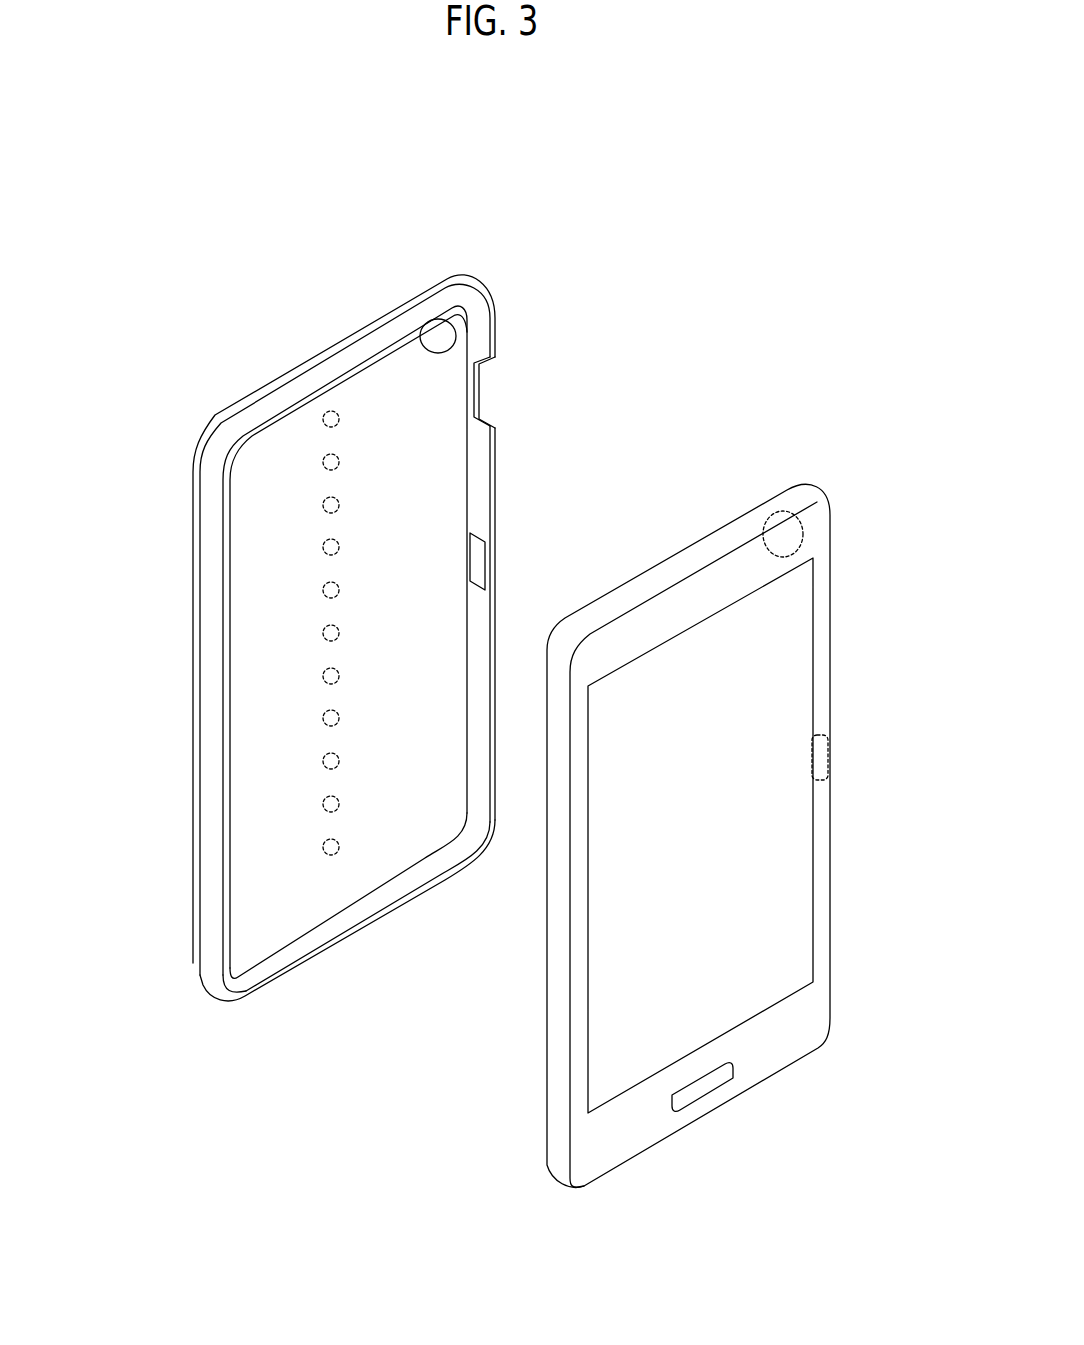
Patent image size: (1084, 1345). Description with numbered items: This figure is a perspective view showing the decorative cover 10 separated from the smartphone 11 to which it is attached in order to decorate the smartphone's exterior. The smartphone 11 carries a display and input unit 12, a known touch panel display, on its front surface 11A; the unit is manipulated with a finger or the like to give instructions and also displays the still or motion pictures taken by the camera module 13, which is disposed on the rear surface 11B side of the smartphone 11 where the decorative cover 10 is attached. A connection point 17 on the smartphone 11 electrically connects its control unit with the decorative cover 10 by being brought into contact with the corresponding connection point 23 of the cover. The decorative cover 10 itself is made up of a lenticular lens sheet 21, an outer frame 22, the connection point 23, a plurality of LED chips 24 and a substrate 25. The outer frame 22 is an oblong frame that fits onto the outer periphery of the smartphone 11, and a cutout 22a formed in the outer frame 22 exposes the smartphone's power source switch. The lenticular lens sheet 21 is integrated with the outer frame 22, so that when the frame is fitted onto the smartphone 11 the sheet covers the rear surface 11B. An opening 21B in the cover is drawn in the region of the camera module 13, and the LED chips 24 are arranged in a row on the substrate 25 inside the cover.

The decorative cover 10 is at (330, 614).
The smartphone 11 is at (692, 794).
The front surface 11A is at (681, 1164).
The rear surface 11B is at (628, 844).
The display and input unit 12 is at (637, 838).
The camera module 13 is at (730, 507).
The connection point 17 is at (878, 743).
The lenticular lens sheet 21 is at (284, 957).
The camera opening 21B is at (392, 302).
The outer frame 22 is at (290, 625).
The cutout 22a is at (531, 388).
The connection point 23 is at (527, 549).
The LED chips 24 is at (254, 574).
The substrate 25 is at (345, 666).